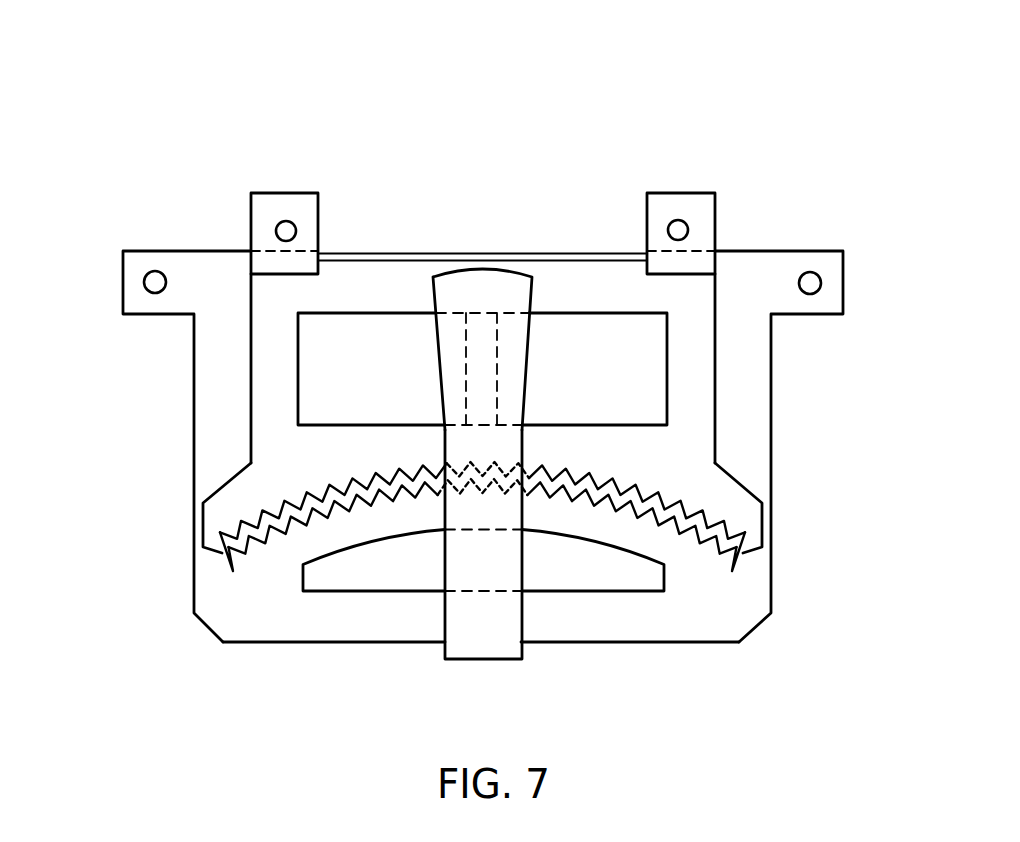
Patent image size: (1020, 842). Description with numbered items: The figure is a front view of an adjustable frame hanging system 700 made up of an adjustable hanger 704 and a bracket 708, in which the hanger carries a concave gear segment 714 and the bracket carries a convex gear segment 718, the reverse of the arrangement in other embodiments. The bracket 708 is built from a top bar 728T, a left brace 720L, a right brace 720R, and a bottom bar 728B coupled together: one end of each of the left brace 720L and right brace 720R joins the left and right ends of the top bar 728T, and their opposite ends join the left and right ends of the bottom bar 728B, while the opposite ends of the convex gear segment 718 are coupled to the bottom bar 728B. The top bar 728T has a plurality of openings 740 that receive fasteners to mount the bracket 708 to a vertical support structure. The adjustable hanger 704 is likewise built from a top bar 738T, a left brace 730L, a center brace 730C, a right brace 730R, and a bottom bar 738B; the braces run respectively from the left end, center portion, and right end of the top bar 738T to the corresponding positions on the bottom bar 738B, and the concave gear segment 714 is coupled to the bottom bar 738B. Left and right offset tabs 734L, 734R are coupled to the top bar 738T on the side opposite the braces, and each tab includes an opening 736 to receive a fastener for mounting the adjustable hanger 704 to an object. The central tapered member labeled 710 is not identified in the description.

The adjustable frame hanging system 700 is at (772, 113).
The adjustable hanger 704 is at (713, 217).
The bracket 708 is at (772, 430).
The pointer / indicator 710 is at (483, 627).
The concave gear segment 714 is at (692, 510).
The convex gear segment 718 is at (663, 537).
The left brace 720L is at (222, 398).
The right brace 720R is at (750, 355).
The top bar 728T is at (408, 252).
The bottom bar 728B is at (367, 617).
The left brace 730L is at (280, 352).
The right brace 730R is at (678, 338).
The center brace 730C is at (473, 390).
The left offset tab 734L is at (252, 193).
The right offset tab 734R is at (646, 193).
The opening 736 is at (285, 229).
The top bar 738T is at (410, 272).
The bottom bar 738B is at (585, 452).
The openings 740 is at (150, 283).